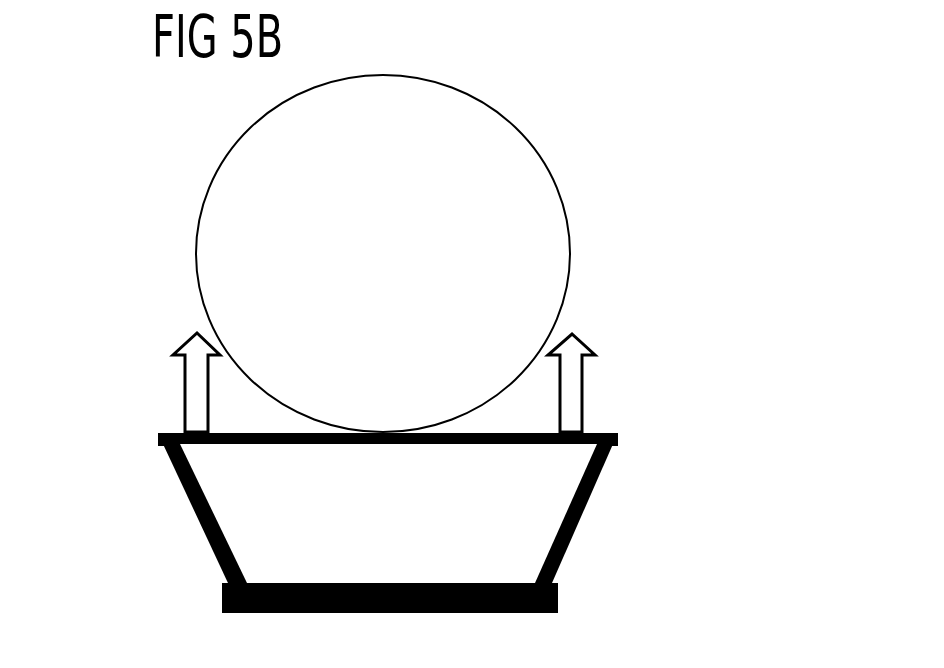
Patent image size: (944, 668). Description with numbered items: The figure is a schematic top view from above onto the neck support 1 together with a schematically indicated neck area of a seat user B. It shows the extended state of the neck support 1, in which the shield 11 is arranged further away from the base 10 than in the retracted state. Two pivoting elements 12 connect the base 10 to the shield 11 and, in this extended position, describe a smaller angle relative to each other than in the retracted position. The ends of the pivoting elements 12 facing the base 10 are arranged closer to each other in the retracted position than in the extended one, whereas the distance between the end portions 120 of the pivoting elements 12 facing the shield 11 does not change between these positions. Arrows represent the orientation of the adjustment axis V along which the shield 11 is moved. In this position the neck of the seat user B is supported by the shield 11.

The neck support 1 is at (355, 533).
The base 10 is at (222, 602).
The shield 11 is at (322, 444).
The pivoting elements 12 is at (190, 493).
The end portions 120 is at (645, 492).
The seat user B is at (542, 205).
The adjustment axis V is at (573, 394).